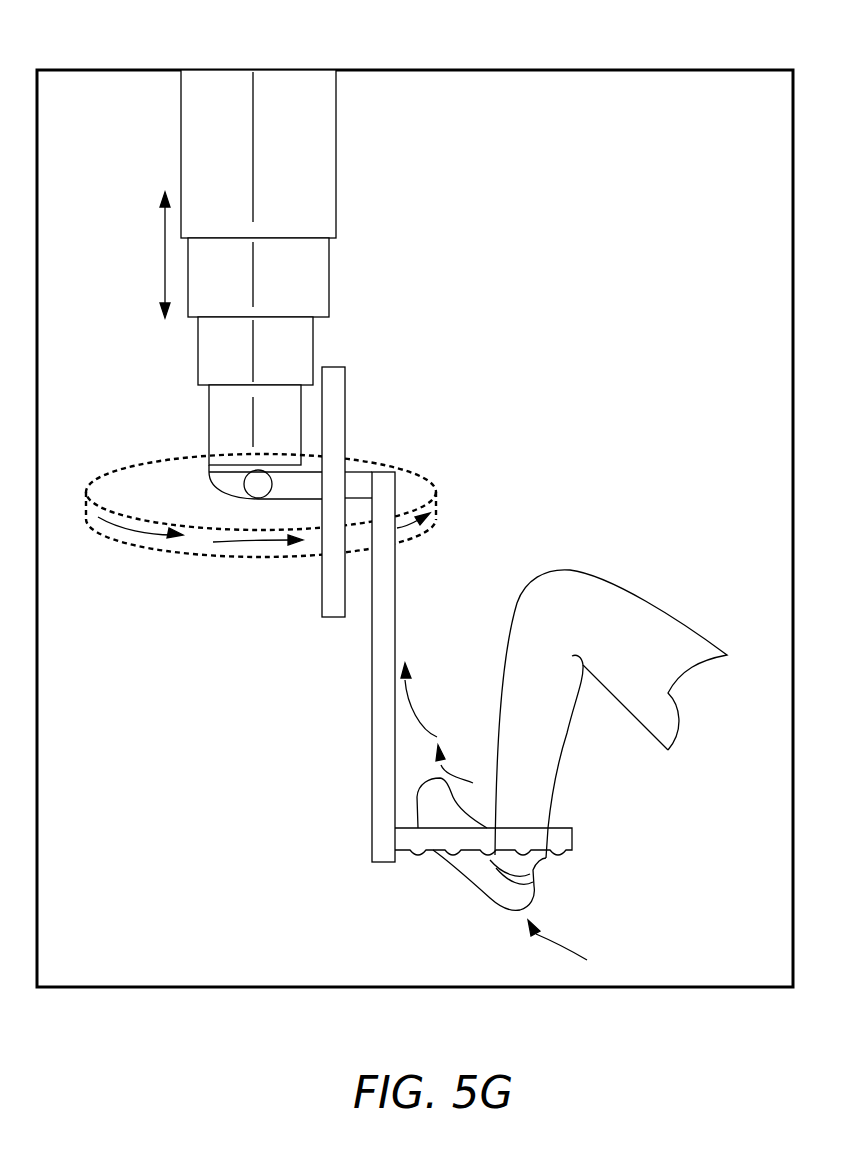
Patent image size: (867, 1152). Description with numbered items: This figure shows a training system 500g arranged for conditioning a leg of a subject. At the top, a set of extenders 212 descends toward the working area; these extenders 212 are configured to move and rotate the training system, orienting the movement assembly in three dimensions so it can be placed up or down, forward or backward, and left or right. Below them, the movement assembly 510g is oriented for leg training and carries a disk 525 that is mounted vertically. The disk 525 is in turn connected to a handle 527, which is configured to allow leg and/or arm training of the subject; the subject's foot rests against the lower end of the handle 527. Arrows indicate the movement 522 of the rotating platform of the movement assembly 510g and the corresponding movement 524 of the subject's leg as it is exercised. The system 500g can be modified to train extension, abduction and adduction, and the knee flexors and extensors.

The training system 500g is at (680, 60).
The extenders 212 is at (336, 127).
The movement assembly 510g is at (445, 297).
The movement 522 is at (163, 533).
The disk 525 is at (338, 392).
The handle 527 is at (372, 690).
The movement 524 is at (408, 662).